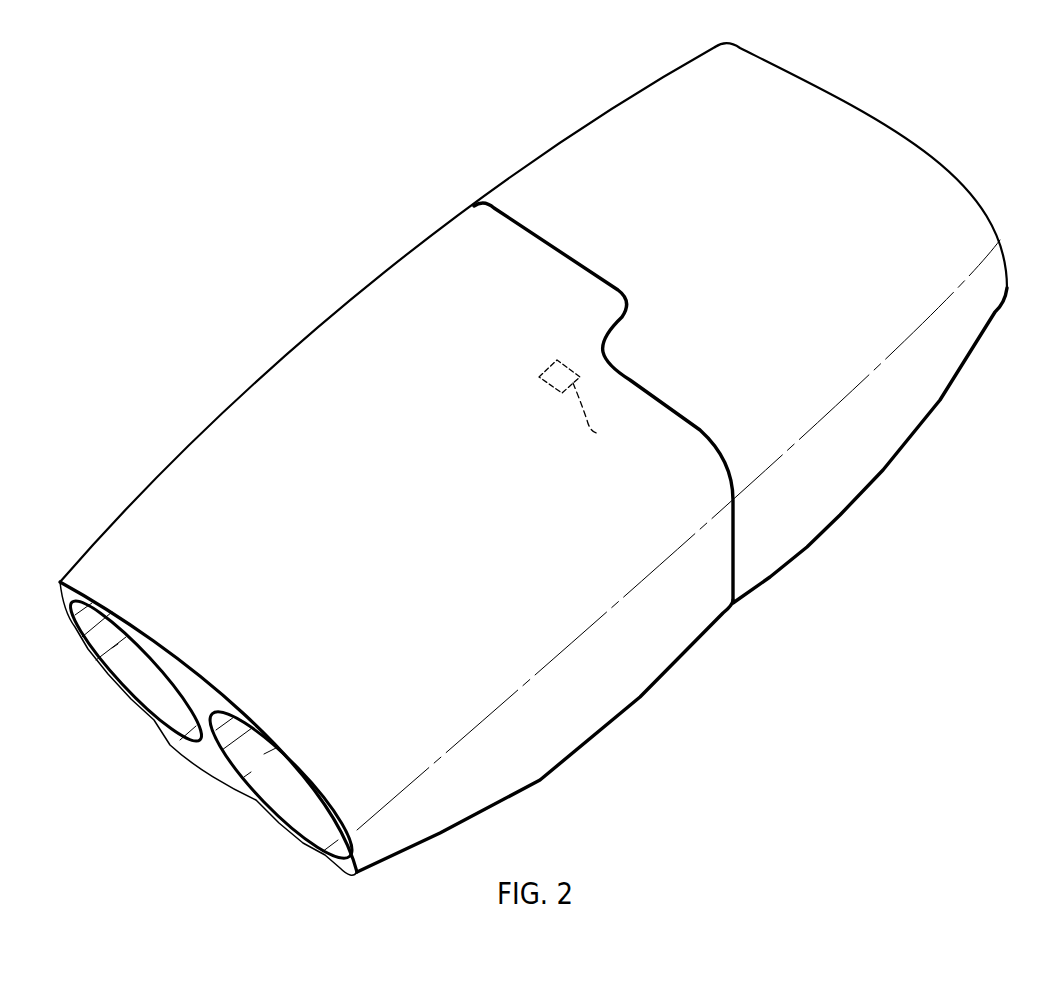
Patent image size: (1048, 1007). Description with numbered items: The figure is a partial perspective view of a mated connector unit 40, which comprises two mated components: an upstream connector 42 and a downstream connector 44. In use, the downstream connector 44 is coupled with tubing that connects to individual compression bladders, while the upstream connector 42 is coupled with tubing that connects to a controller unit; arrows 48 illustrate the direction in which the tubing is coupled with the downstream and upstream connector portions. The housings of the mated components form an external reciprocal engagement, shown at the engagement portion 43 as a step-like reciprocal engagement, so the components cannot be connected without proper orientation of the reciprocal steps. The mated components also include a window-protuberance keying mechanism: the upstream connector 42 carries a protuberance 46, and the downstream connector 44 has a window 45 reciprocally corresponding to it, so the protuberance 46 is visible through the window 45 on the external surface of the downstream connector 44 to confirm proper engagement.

The connector unit 40 is at (541, 444).
The upstream connector 42 is at (963, 205).
The engagement portion 43 is at (477, 203).
The downstream connector 44 is at (315, 344).
The window 45 is at (599, 415).
The protuberance 46 is at (563, 373).
The arrows 48 is at (803, 80).